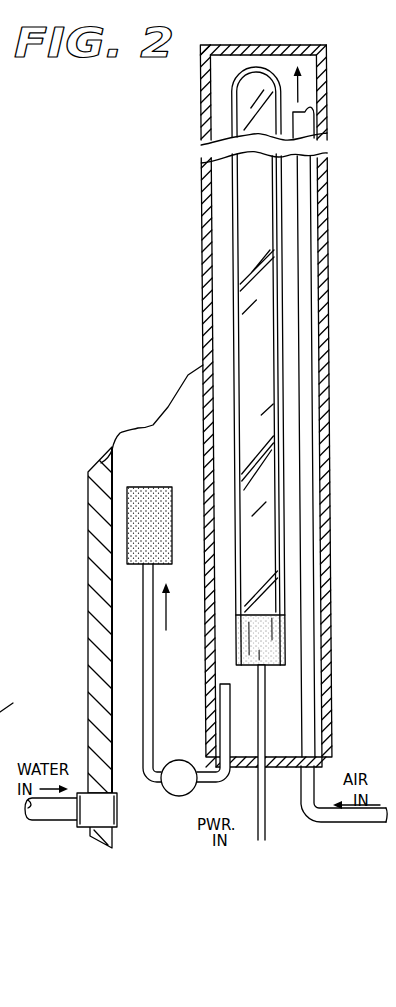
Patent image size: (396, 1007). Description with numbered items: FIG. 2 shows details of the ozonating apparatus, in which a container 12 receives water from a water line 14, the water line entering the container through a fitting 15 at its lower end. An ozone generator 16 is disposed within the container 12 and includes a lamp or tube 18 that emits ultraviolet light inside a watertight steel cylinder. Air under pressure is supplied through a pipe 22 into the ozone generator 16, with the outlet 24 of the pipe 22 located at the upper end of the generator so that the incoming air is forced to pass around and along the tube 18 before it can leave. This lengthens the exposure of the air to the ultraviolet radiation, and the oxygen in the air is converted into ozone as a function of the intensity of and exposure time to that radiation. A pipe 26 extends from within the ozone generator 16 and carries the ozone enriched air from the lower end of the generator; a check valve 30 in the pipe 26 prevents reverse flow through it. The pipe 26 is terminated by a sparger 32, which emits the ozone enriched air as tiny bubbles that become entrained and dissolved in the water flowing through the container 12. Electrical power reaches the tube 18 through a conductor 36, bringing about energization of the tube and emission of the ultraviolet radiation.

The container 12 is at (88, 607).
The water line 14 is at (61, 823).
The fitting 15 is at (119, 812).
The ozone generator 16 is at (335, 578).
The lamp or tube 18 is at (234, 244).
The pipe 22 is at (314, 733).
The outlet 24 is at (329, 138).
The pipe 26 is at (155, 668).
The check valve 30 is at (172, 796).
The sparger 32 is at (151, 488).
The conductor 36 is at (266, 822).